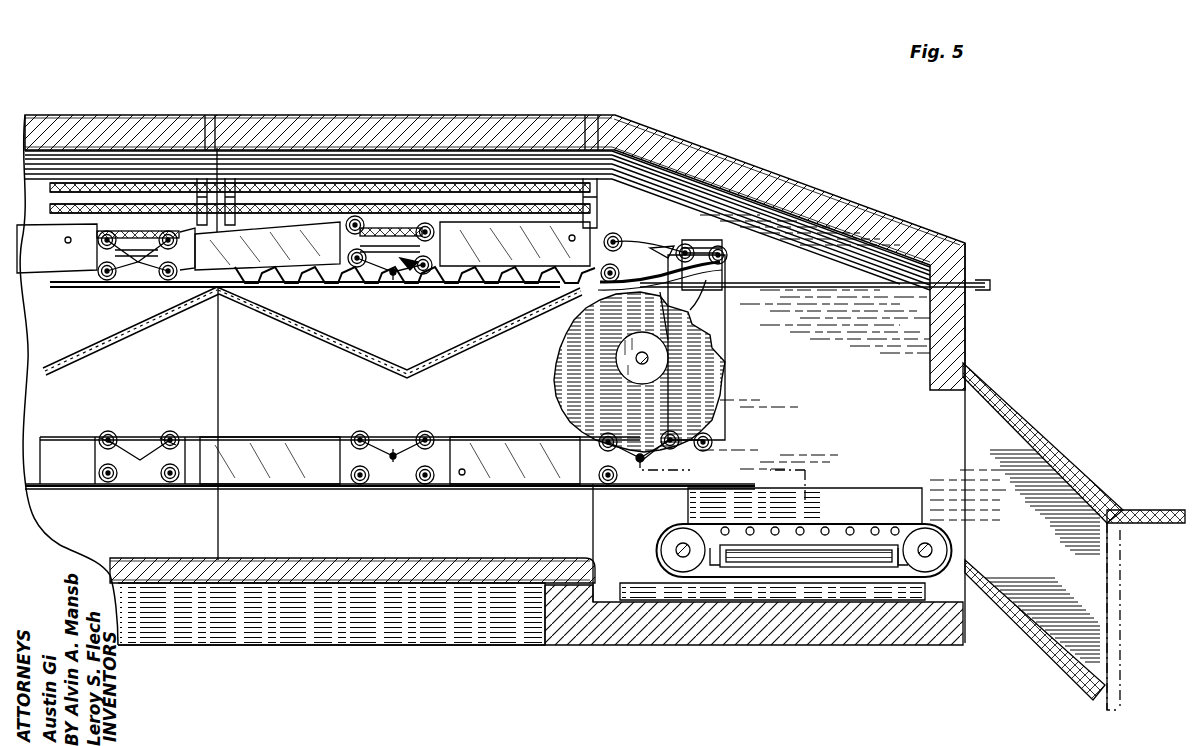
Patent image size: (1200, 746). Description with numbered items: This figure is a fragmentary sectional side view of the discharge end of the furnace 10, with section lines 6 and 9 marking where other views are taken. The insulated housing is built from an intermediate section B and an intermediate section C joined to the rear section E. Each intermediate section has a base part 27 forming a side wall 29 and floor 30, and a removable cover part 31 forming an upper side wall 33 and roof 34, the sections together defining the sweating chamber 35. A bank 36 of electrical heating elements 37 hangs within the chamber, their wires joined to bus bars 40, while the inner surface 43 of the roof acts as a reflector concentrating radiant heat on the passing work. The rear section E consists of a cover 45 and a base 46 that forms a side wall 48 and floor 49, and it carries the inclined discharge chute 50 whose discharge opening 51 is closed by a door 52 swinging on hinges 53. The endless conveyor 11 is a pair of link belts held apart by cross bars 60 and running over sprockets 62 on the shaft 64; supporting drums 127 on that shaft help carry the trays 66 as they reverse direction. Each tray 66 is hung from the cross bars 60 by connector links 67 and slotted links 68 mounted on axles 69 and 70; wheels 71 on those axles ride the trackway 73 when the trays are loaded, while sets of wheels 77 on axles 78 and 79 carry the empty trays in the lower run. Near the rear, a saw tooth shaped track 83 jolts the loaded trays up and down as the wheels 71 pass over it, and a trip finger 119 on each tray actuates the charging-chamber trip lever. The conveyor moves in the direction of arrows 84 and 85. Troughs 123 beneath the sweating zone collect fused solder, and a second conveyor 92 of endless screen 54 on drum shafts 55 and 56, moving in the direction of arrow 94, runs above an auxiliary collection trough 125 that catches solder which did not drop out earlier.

The section line 6- 6 is at (405, 80).
The section line 9- 9 is at (637, 90).
The intermediate section B is at (88, 108).
The intermediate section C is at (453, 108).
The rear section E is at (688, 139).
The cover part 31 is at (156, 113).
The roof 34 is at (113, 130).
The upper side wall 33 is at (38, 190).
The furnace 10 is at (220, 150).
The sweating chamber 35 is at (236, 160).
The inner surface of the roof 43 is at (398, 150).
The electrical heating element 37 is at (476, 185).
The bank of electrical heating elements 36 is at (580, 178).
The bus bar 40 is at (598, 200).
The cover 45 is at (855, 208).
The trip finger 119 is at (605, 225).
The arrow 84 is at (638, 254).
The set of wheels 77 is at (95, 247).
The axle 78 is at (102, 237).
The trackway 73 is at (120, 283).
The wheel 71 is at (103, 283).
The axle 79 is at (196, 228).
The tray 66 is at (392, 353).
The connector link 67 is at (381, 270).
The axle 69 is at (352, 266).
The axle 70 is at (422, 272).
The cross bar 60 is at (395, 280).
The slotted link 68 is at (410, 275).
The trough 123 is at (108, 340).
The saw tooth shaped track 83 is at (508, 316).
The side wall 29 is at (288, 398).
The arrow 85 is at (273, 431).
The sprocket 62 is at (556, 372).
The shaft 64 is at (648, 356).
The supporting drum 127 is at (672, 368).
The base 46 is at (967, 338).
The side wall 48 is at (945, 408).
The endless conveyor 11 is at (485, 437).
The floor 30 is at (158, 565).
The base part 27 is at (331, 587).
The floor 49 is at (776, 640).
The arrow 94 is at (825, 500).
The second conveyor 92 is at (878, 524).
The drum shaft 56 is at (683, 556).
The drum shaft 55 is at (932, 552).
The auxiliary collection trough 125 is at (755, 565).
The endless screen 54 is at (895, 580).
The door 52 is at (1115, 510).
The hinge 53 is at (1112, 524).
The discharge opening 51 is at (1110, 665).
The inclined discharge chute 50 is at (1075, 635).